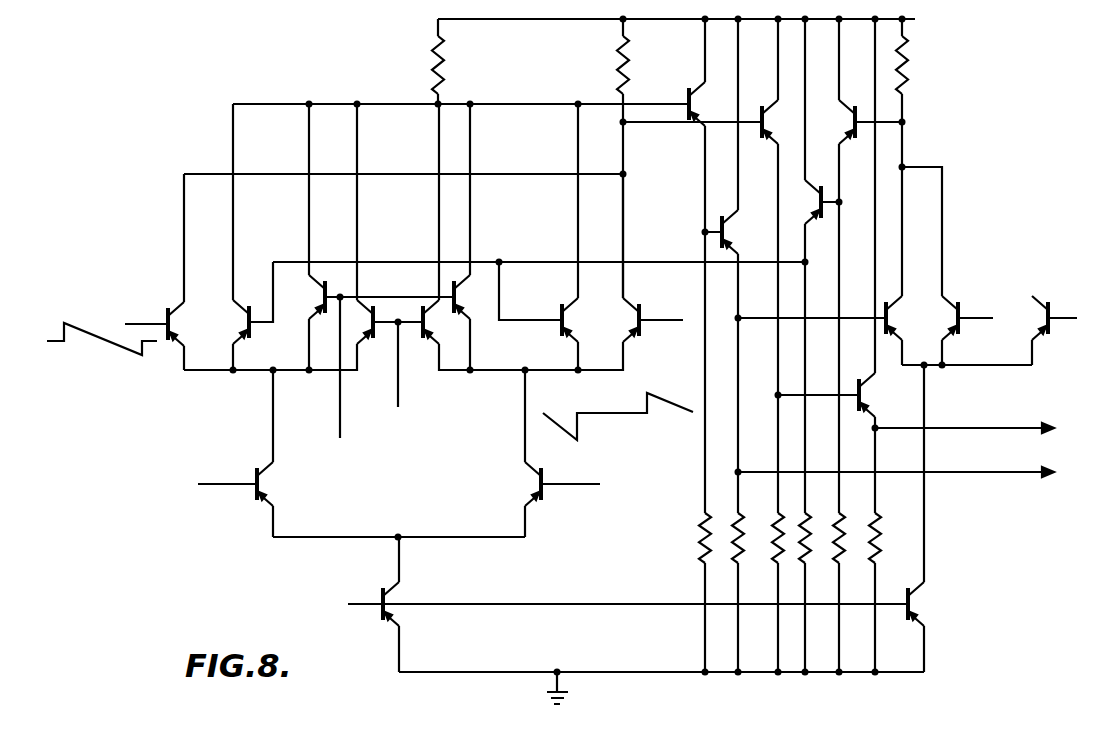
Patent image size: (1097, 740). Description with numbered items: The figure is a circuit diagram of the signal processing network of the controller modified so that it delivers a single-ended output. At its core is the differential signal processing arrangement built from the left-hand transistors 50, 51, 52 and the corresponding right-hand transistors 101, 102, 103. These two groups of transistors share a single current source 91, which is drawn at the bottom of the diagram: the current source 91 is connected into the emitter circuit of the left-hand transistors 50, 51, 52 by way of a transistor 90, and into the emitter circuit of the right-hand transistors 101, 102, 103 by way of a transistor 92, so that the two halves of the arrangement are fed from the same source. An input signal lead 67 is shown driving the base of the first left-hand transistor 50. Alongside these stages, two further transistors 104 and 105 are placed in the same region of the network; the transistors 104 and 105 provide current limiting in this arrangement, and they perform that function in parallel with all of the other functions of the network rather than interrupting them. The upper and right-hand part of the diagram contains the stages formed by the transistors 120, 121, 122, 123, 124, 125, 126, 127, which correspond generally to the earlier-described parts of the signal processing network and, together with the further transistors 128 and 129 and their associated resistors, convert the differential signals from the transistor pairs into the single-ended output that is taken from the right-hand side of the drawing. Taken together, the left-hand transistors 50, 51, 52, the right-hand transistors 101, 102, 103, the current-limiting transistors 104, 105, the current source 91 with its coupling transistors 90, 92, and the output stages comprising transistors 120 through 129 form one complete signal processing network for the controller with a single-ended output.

The left-hand transistor 50 is at (180, 348).
The input signal lead 67 is at (146, 322).
The left-hand transistor 52 is at (249, 322).
The current limiting transistor 104 is at (323, 297).
The left-hand transistor 51 is at (364, 340).
The right-hand transistor 102 is at (430, 340).
The current limiting transistor 105 is at (458, 296).
The right-hand transistor 103 is at (566, 320).
The right-hand transistor 101 is at (632, 318).
The transistor 120 is at (691, 101).
The transistor 121 is at (728, 229).
The transistor 122 is at (760, 108).
The transistor 123 is at (850, 121).
The transistor 124 is at (815, 202).
The transistor 125 is at (862, 397).
The transistor 126 is at (889, 318).
The transistor 127 is at (946, 300).
The transistor 128 is at (1040, 320).
The transistor 129 is at (910, 600).
The transistor 90 is at (262, 482).
The current source 91 is at (394, 625).
The transistor 92 is at (537, 482).